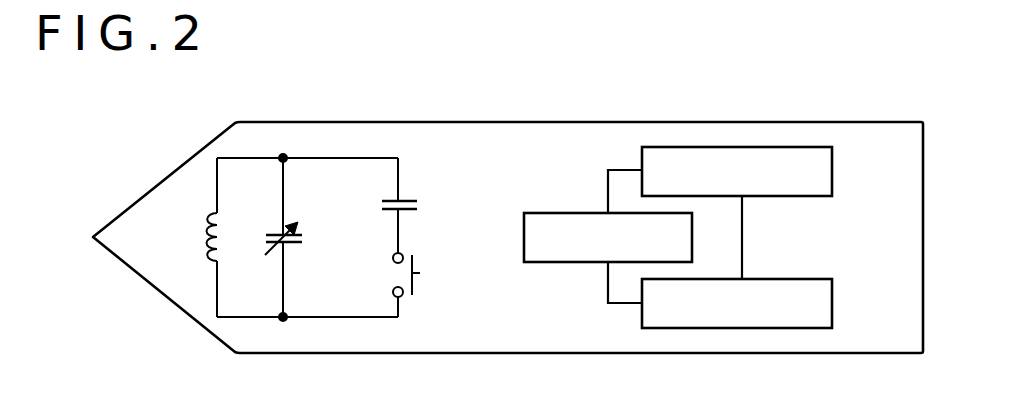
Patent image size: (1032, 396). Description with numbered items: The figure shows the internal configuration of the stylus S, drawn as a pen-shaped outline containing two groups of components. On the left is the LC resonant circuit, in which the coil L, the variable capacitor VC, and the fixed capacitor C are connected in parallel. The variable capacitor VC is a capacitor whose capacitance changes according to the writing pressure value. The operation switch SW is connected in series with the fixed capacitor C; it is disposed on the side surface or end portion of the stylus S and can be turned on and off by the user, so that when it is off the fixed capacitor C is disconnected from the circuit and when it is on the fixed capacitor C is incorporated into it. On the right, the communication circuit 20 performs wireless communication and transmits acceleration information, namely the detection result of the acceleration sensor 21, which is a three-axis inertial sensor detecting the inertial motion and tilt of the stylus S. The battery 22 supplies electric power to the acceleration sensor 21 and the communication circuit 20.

The stylus S is at (857, 120).
The coil L is at (202, 237).
The variable capacitor VC is at (305, 237).
The fixed capacitor C is at (412, 205).
The operation switch SW is at (413, 261).
The communication circuit 20 is at (833, 170).
The acceleration sensor 21 is at (833, 302).
The battery 22 is at (558, 263).